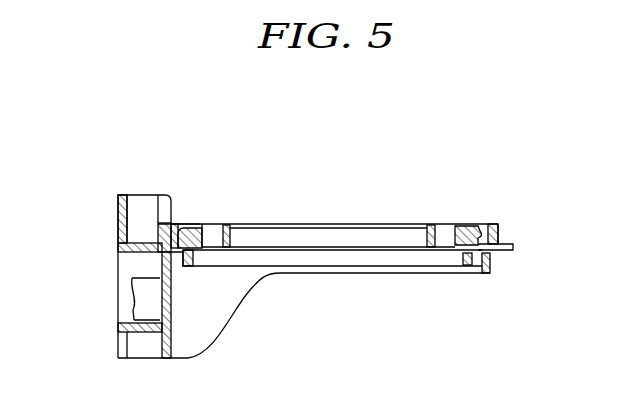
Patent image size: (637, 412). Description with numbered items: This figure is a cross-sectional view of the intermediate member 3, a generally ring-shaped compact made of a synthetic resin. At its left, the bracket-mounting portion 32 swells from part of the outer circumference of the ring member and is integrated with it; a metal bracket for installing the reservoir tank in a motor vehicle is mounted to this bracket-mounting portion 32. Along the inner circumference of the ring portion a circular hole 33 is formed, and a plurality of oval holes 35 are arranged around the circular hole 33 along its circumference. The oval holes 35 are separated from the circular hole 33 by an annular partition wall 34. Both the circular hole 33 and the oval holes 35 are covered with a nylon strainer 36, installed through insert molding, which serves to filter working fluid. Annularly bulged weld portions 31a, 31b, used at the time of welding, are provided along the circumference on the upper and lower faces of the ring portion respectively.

The intermediate member 3 is at (305, 183).
The bracket-mounting portion 32 is at (125, 265).
The oval holes 35 is at (202, 223).
The circular hole 33 is at (227, 225).
The strainer 36 is at (357, 230).
The annular partition wall 34 is at (430, 225).
The upper weld portion 31a is at (493, 225).
The lower weld portion 31b is at (465, 262).